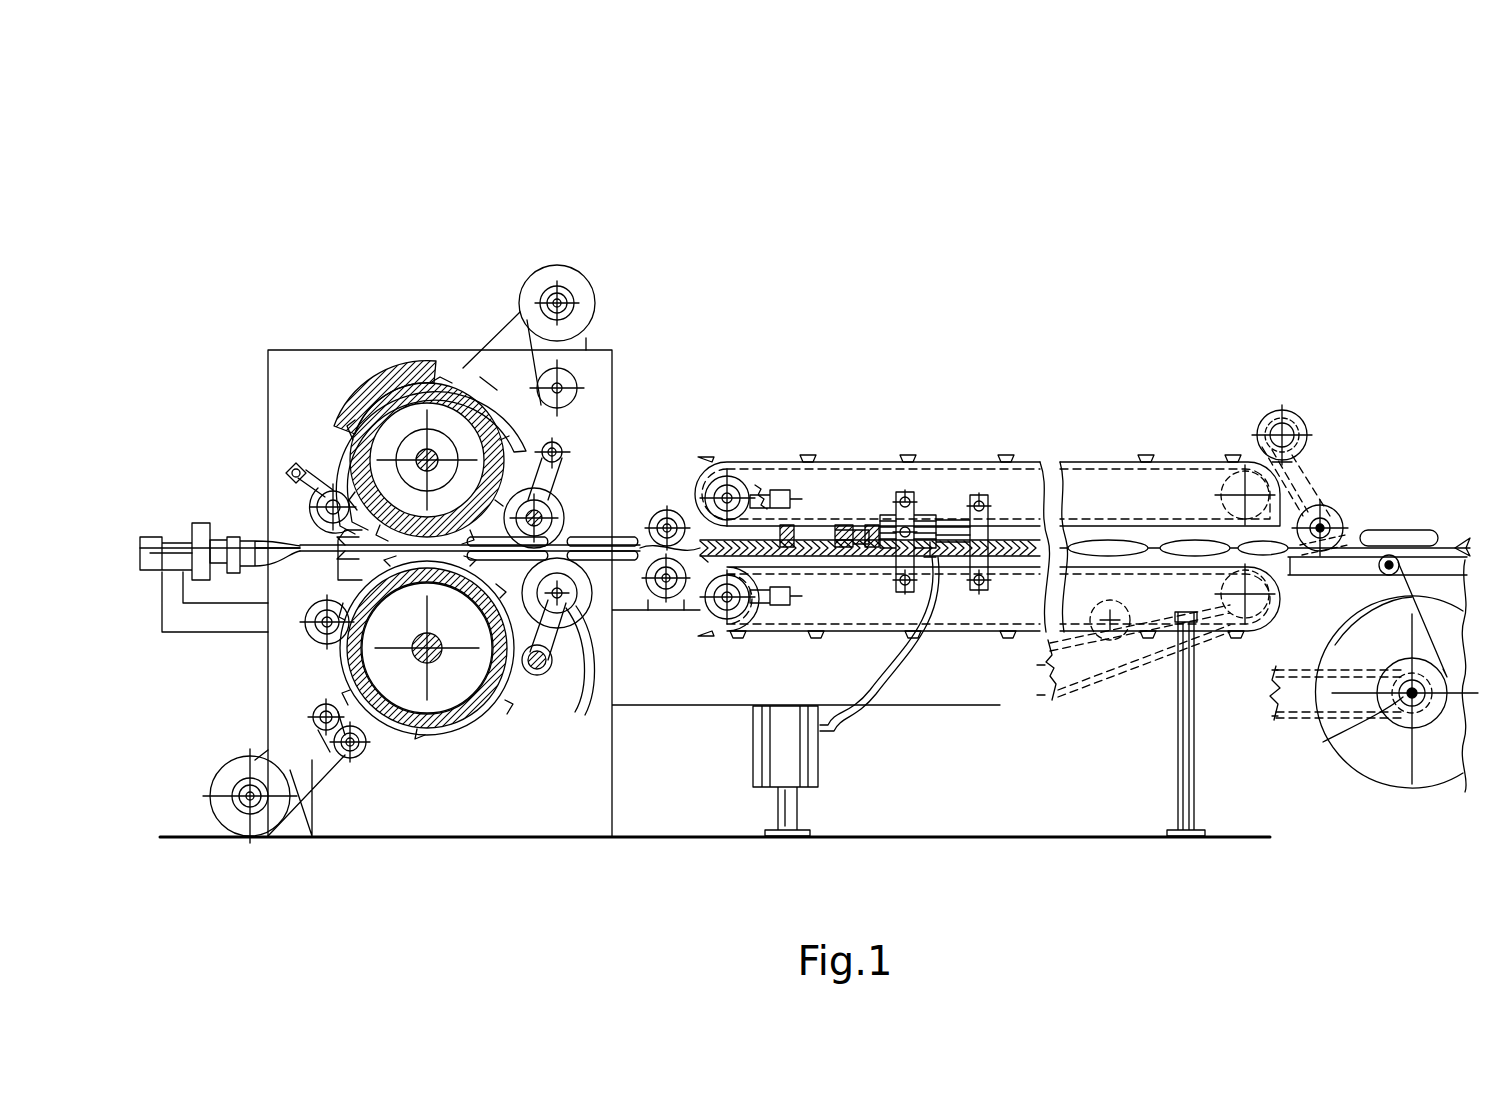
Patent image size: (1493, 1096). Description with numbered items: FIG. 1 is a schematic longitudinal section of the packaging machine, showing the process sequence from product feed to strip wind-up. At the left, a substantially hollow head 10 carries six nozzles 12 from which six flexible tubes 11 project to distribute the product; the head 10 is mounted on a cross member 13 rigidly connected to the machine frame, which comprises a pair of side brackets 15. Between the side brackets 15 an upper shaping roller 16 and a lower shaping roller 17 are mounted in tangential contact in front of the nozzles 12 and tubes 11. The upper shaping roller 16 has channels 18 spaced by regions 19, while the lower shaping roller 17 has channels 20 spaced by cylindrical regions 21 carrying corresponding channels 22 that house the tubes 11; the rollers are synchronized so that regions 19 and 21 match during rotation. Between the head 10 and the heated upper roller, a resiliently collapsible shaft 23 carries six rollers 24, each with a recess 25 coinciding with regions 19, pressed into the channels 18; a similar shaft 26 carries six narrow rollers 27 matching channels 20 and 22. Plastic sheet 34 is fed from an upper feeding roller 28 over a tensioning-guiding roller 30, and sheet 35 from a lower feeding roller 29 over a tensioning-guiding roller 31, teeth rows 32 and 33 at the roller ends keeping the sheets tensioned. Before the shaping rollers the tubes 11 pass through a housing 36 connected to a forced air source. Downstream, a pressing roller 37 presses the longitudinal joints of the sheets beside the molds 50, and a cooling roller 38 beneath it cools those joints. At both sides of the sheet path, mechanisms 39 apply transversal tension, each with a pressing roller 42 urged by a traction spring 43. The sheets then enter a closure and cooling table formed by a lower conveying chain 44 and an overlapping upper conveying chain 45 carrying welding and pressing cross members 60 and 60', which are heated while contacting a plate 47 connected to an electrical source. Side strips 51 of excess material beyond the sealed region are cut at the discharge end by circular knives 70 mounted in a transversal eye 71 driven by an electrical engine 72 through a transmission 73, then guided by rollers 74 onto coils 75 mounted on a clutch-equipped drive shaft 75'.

The head 10 is at (148, 575).
The tubes 11 is at (262, 548).
The nozzles 12 is at (262, 553).
The cross member 13 is at (186, 615).
The side brackets 15 is at (283, 349).
The upper shaping roller 16 is at (555, 432).
The lower shaping roller 17 is at (447, 745).
The channels 18 is at (338, 432).
The regions 19 is at (410, 378).
The channels 20 is at (372, 705).
The cylindrical regions 21 is at (490, 700).
The channels 22 is at (462, 705).
The shaft 23 is at (333, 503).
The rollers 24 is at (300, 515).
The recess 25 is at (320, 522).
The shaft 26 is at (327, 640).
The narrow rollers 27 is at (318, 655).
The upper feeding roller 28 is at (575, 296).
The lower feeding roller 29 is at (208, 802).
The tensioning-guiding roller 30 is at (572, 382).
The tensioning-guiding roller 31 is at (348, 760).
The teeth rows 32 is at (458, 365).
The teeth rows 33 is at (430, 745).
The plastic sheet 34 is at (492, 350).
The sheet 35 is at (293, 810).
The housing 36 is at (265, 575).
The pressing roller 37 is at (573, 464).
The cooling roller 38 is at (593, 715).
The mechanisms 39 is at (672, 600).
The pressing roller 42 is at (660, 603).
The traction spring 43 is at (655, 505).
The lower conveying chain 44 is at (788, 632).
The upper conveying chain 45 is at (792, 462).
The plate 47 is at (912, 520).
The mold 50 is at (1420, 520).
The side strips 51 is at (1335, 641).
The welding and pressing cross member 60 is at (788, 636).
The welding and pressing cross member 60' is at (801, 473).
The circular knives 70 is at (1340, 522).
The transversal eye 71 is at (1318, 508).
The electrical engine 72 is at (1268, 422).
The transmission 73 is at (1308, 468).
The rollers 74 is at (1385, 565).
The coils 75 is at (1374, 683).
The drive shaft 75' is at (1339, 730).